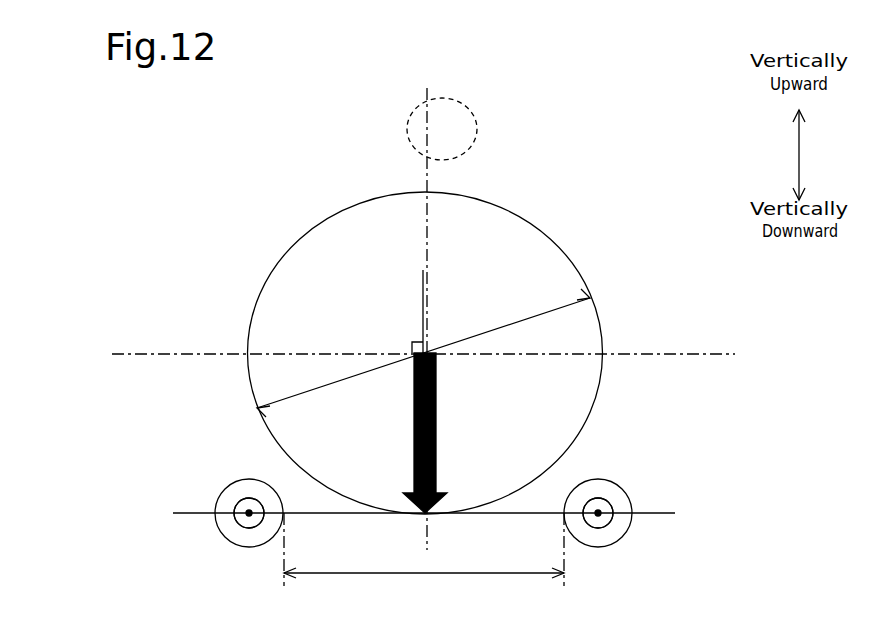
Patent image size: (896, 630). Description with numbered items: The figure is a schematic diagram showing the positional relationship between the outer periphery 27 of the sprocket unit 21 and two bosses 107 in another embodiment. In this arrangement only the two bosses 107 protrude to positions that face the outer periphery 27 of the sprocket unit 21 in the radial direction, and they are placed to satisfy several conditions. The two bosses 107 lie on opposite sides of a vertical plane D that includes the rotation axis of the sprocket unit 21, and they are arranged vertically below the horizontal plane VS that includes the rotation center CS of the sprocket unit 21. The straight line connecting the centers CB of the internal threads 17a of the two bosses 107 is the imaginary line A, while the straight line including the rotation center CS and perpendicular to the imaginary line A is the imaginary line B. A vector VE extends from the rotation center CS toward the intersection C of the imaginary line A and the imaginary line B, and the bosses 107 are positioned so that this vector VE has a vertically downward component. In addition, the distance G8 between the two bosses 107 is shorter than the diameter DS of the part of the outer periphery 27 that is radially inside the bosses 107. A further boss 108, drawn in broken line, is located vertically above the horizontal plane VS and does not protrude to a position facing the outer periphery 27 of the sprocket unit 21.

The boss 108 is at (478, 130).
The outer periphery 27 is at (432, 353).
The sprocket unit 21 is at (512, 214).
The bosses 107 is at (250, 479).
The internal threads 17a is at (242, 523).
The centers CB is at (249, 515).
The imaginary line A is at (655, 512).
The distance G8 is at (475, 572).
The diameter DS is at (520, 323).
The horizontal plane VS is at (130, 353).
The vector VE is at (437, 425).
The rotation center CS is at (428, 351).
The intersection C is at (421, 510).
The imaginary line B is at (422, 310).
The vertical plane D is at (428, 259).